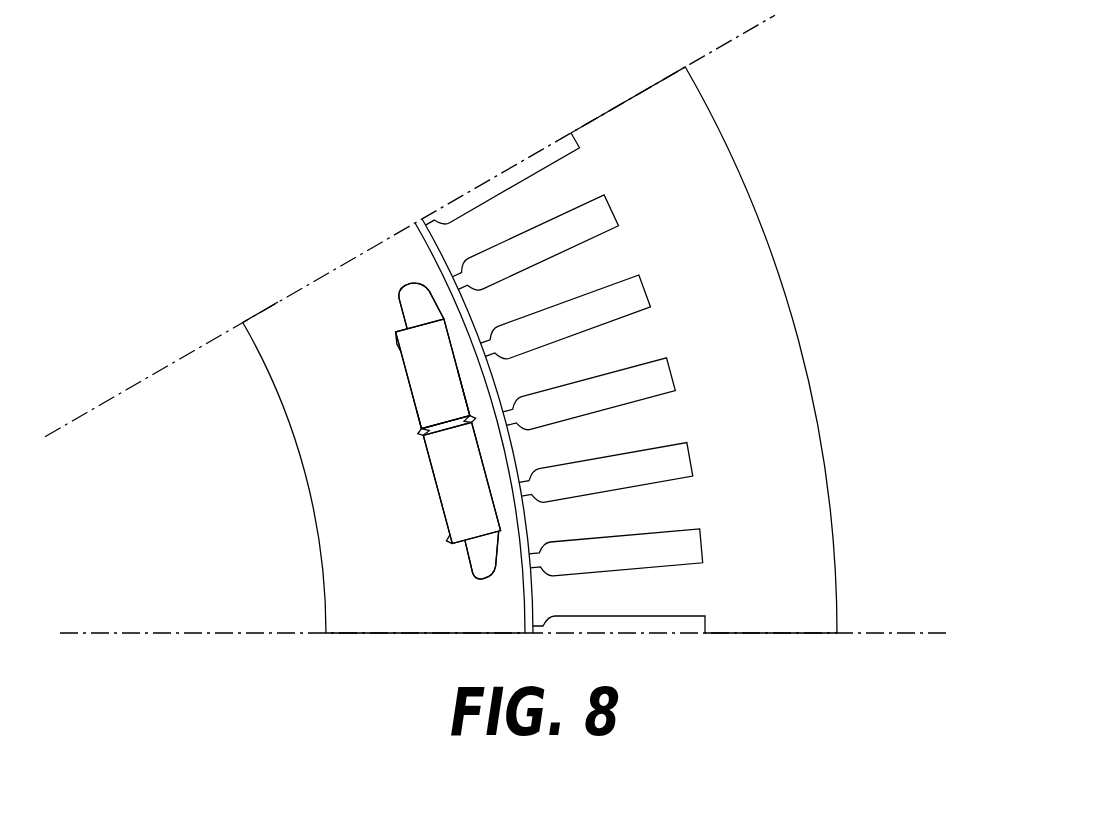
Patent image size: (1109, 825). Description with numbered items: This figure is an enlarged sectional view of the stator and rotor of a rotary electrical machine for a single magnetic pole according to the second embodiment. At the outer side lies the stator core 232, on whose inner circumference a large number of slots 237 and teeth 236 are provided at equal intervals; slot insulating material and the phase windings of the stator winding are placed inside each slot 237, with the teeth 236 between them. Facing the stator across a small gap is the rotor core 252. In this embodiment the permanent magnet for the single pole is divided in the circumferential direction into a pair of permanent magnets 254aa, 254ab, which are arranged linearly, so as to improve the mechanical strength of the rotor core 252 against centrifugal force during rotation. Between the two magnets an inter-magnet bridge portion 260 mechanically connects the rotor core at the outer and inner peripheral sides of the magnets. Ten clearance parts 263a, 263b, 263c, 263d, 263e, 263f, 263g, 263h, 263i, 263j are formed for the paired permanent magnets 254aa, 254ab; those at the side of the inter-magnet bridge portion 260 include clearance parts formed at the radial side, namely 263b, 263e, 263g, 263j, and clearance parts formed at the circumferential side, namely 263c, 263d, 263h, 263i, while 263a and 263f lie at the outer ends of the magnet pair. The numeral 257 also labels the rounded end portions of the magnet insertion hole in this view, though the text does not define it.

The stator core 232 is at (763, 275).
The tooth 236 is at (605, 260).
The slot 237 is at (603, 212).
The rotor core 252 is at (256, 314).
The permanent magnet 254aa is at (483, 511).
The permanent magnet 254ab is at (435, 341).
The flux barrier portion of magnet insertion hole 257 is at (398, 297).
The inter-magnet bridge portion 260 is at (500, 533).
The clearance part 263a is at (447, 538).
The clearance part 263b is at (428, 448).
The clearance part 263c is at (433, 437).
The clearance part 263d is at (476, 426).
The clearance part 263e is at (480, 440).
The clearance part 263f is at (394, 344).
The clearance part 263g is at (413, 417).
The clearance part 263h is at (455, 430).
The clearance part 263i is at (480, 417).
The clearance part 263j is at (483, 393).